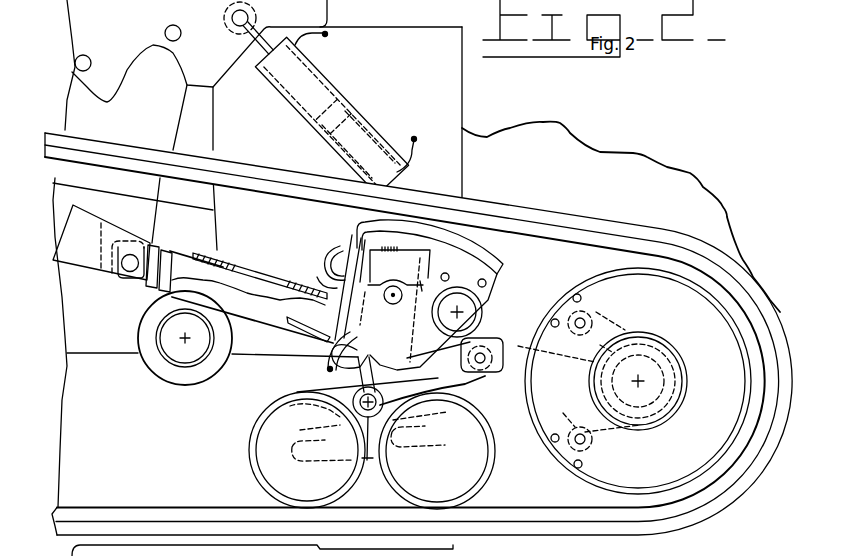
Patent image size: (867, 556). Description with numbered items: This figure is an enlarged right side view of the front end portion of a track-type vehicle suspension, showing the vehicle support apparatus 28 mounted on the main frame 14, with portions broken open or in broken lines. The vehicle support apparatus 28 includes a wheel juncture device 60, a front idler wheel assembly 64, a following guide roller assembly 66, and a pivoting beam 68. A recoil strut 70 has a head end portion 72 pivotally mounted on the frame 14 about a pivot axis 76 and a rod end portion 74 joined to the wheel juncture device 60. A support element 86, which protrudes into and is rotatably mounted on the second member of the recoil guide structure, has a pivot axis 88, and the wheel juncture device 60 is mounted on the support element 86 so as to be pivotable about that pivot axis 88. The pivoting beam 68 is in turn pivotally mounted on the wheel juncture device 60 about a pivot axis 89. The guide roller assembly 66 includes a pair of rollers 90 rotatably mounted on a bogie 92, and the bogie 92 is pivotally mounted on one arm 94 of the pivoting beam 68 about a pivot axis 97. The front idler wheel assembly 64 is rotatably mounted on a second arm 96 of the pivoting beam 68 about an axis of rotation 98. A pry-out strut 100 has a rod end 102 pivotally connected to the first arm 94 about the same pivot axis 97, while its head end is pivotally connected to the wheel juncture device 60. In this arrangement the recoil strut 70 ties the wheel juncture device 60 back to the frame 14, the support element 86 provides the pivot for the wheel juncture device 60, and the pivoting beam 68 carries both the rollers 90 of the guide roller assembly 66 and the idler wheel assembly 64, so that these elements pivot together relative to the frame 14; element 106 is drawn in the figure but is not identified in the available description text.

The main frame 14 is at (104, 209).
The vehicle support apparatus 28 is at (482, 242).
The wheel juncture device 60 is at (493, 280).
The front idler wheel assembly 64 is at (717, 491).
The guide roller assembly 66 is at (249, 476).
The pivoting beam 68 is at (473, 396).
The recoil strut 70 is at (279, 264).
The head end portion 72 is at (250, 310).
The rod end portion 74 is at (161, 290).
The pivot axis 76 is at (127, 270).
The support element 86 is at (478, 318).
The pivot axis 88 is at (437, 326).
The pivot axis 89 is at (485, 346).
The rollers 90 is at (320, 495).
The bogie 92 is at (382, 488).
The arm 94 is at (330, 385).
The second arm 96 is at (575, 402).
The pivot axis 97 is at (350, 413).
The axis of rotation 98 is at (641, 380).
The pry-out strut 100 is at (412, 305).
The rod end 102 is at (423, 385).
The roller pin 106 is at (400, 302).